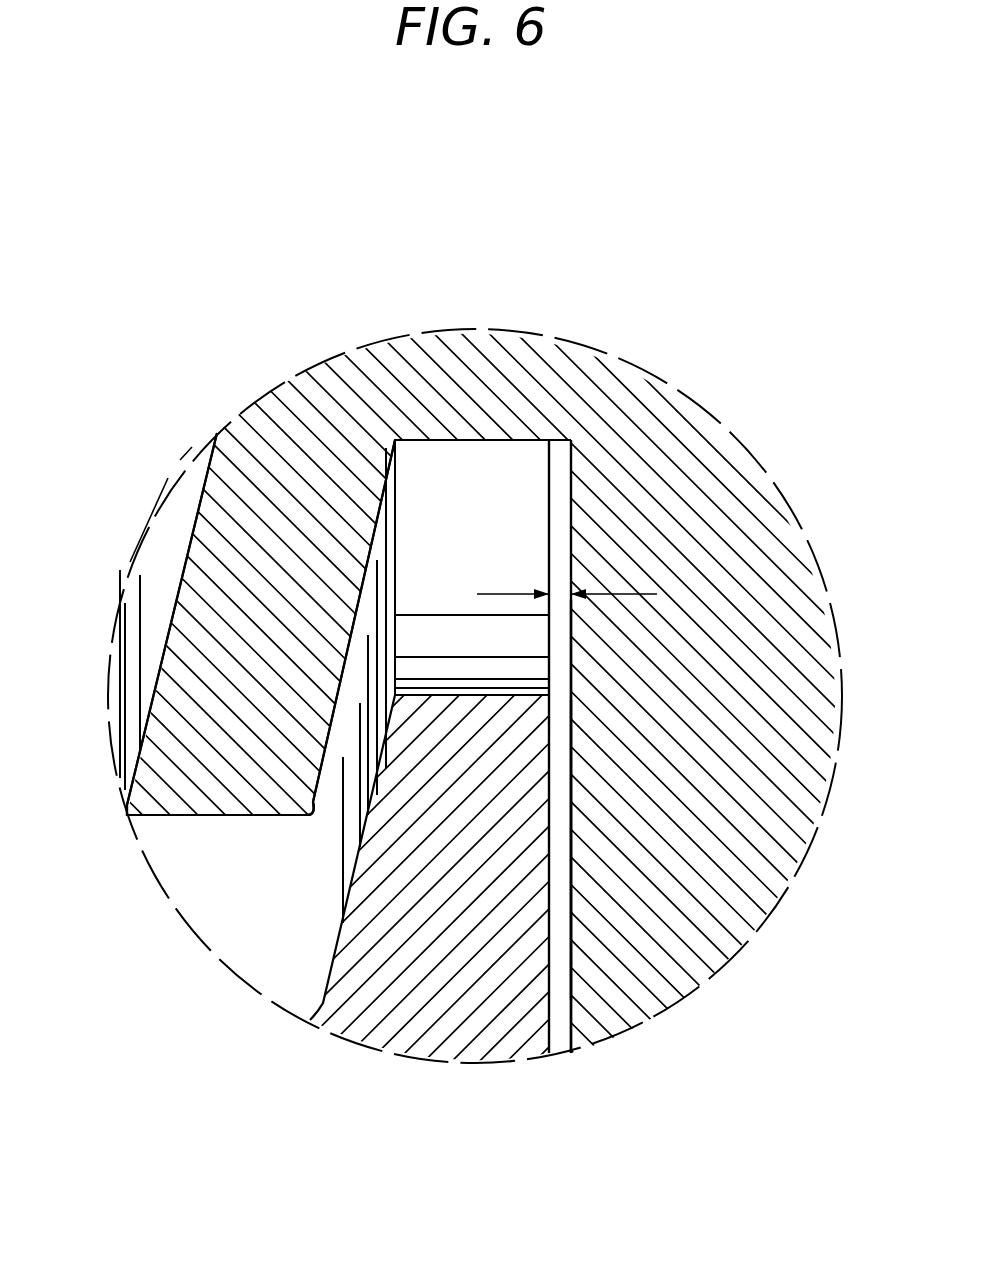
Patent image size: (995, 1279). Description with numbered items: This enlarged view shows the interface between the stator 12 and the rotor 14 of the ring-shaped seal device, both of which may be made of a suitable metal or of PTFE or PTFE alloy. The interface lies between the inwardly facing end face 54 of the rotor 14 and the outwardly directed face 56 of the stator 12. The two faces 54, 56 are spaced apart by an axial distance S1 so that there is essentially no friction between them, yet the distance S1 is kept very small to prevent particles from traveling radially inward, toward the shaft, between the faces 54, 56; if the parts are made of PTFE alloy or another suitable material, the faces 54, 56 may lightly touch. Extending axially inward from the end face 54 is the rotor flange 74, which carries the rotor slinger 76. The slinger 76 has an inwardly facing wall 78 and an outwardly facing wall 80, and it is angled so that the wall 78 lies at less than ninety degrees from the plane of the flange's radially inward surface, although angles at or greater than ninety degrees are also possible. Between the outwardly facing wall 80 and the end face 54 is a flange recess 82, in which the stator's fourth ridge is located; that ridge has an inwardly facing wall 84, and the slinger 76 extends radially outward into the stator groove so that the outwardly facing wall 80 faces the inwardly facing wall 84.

The stator 12 is at (446, 1062).
The rotor 14 is at (807, 820).
The inwardly facing end face 54 is at (573, 880).
The outwardly directed face 56 is at (553, 927).
The rotor flange 74 is at (570, 378).
The rotor slinger 76 is at (203, 485).
The inwardly facing wall 78 is at (150, 546).
The outwardly facing wall 80 is at (310, 815).
The flange recess 82 is at (490, 492).
The inwardly facing wall 84 is at (363, 847).
The axial distance S1 is at (617, 590).